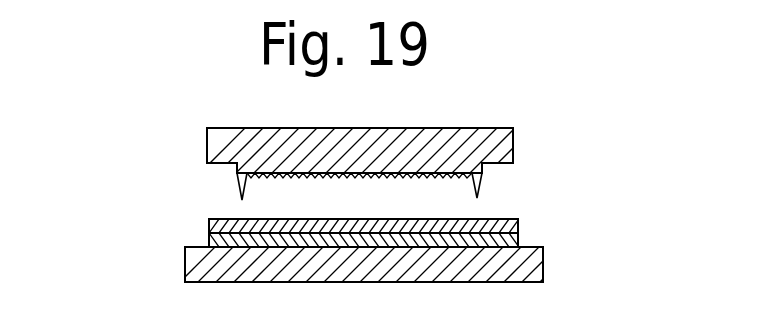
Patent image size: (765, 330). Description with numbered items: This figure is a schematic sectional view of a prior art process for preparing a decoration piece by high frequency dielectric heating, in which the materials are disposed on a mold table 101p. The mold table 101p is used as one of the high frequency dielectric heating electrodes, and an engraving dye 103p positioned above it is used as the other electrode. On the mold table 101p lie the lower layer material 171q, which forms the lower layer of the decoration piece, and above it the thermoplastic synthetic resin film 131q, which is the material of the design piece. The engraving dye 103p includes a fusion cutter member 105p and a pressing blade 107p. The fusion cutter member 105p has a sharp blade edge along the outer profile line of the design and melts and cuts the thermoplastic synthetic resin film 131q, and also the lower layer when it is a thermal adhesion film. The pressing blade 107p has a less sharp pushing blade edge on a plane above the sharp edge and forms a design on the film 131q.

The engraving dye 103p is at (488, 143).
The fusion cutter member 105p is at (237, 190).
The pressing blade 107p is at (295, 176).
The thermoplastic synthetic resin film 131q is at (495, 223).
The lower layer material 171q is at (503, 240).
The mold table 101p is at (523, 268).